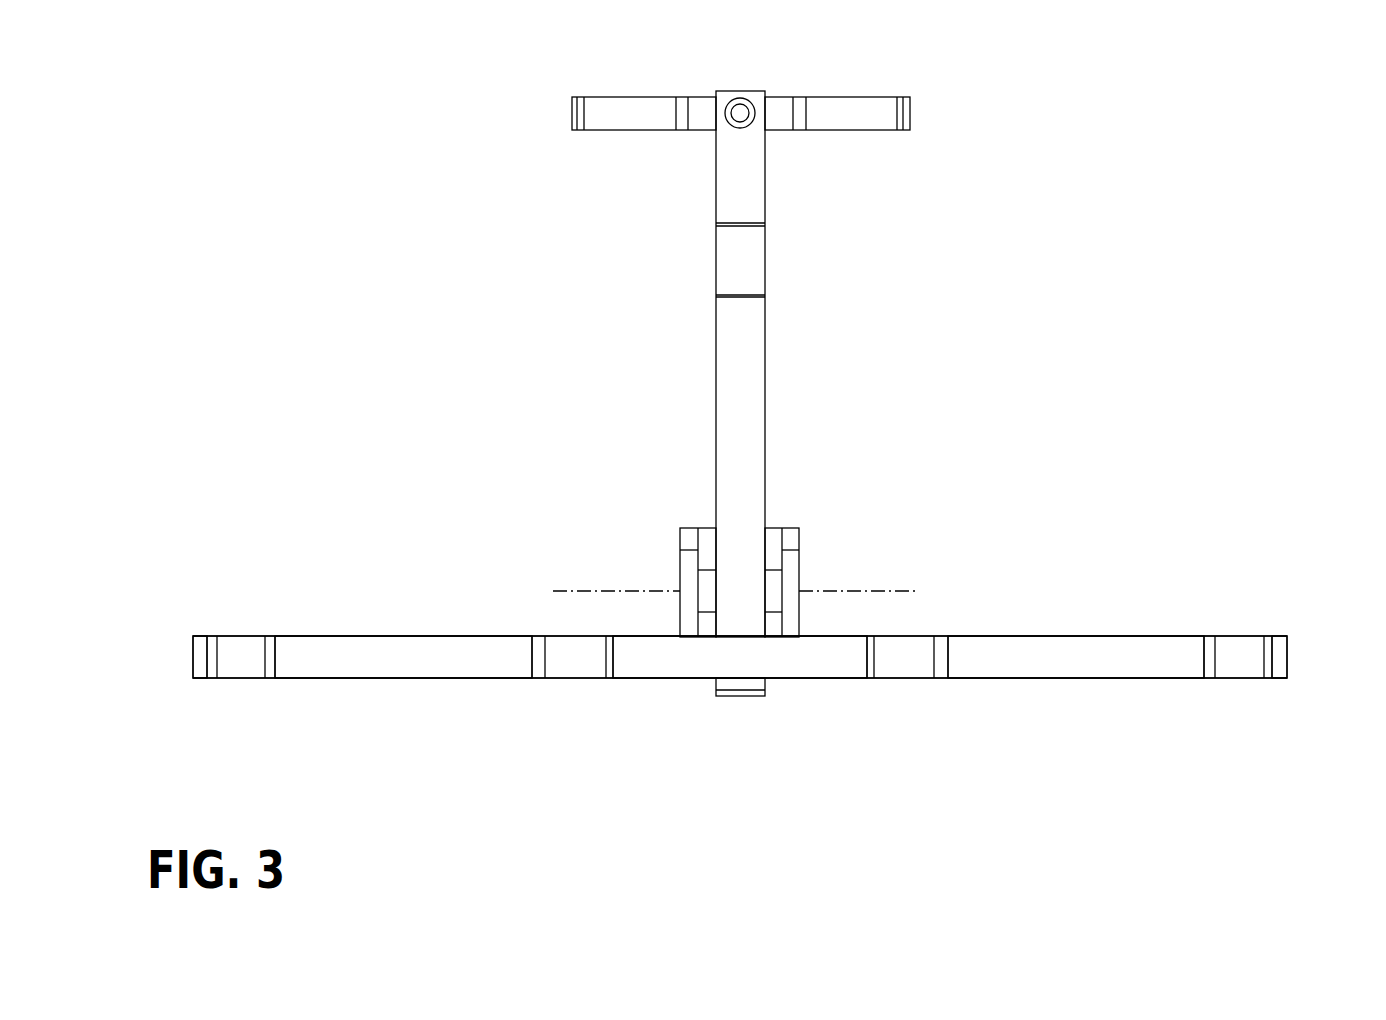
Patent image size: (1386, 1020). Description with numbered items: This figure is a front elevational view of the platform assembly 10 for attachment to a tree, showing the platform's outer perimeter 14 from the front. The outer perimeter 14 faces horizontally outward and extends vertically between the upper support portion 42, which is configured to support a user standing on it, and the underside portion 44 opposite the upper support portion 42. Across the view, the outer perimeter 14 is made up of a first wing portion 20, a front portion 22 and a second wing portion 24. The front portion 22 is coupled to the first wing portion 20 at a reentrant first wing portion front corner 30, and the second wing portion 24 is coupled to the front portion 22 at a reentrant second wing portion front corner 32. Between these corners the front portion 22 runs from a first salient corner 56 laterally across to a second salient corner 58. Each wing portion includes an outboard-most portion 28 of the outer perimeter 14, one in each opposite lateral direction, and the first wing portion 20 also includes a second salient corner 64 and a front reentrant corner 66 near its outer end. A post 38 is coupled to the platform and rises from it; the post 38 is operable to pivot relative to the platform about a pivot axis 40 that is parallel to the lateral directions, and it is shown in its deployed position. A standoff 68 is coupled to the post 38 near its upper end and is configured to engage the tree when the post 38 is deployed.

The platform assembly 10 is at (375, 380).
The outer perimeter 14 is at (1038, 670).
The first wing portion 20 is at (387, 658).
The front portion 22 is at (712, 660).
The second wing portion 24 is at (1096, 657).
The outboard-most portion 28 is at (193, 653).
The first wing portion front corner 30 is at (537, 660).
The second wing portion front corner 32 is at (942, 665).
The post 38 is at (745, 415).
The pivot axis 40 is at (588, 590).
The upper support portion 42 is at (402, 636).
The underside portion 44 is at (441, 680).
The first salient corner of the front portion 56 is at (607, 662).
The second salient corner of the front portion 58 is at (870, 658).
The second salient corner of the first wing portion 64 is at (212, 665).
The front reentrant corner of the first wing portion 66 is at (270, 665).
The standoff 68 is at (858, 92).